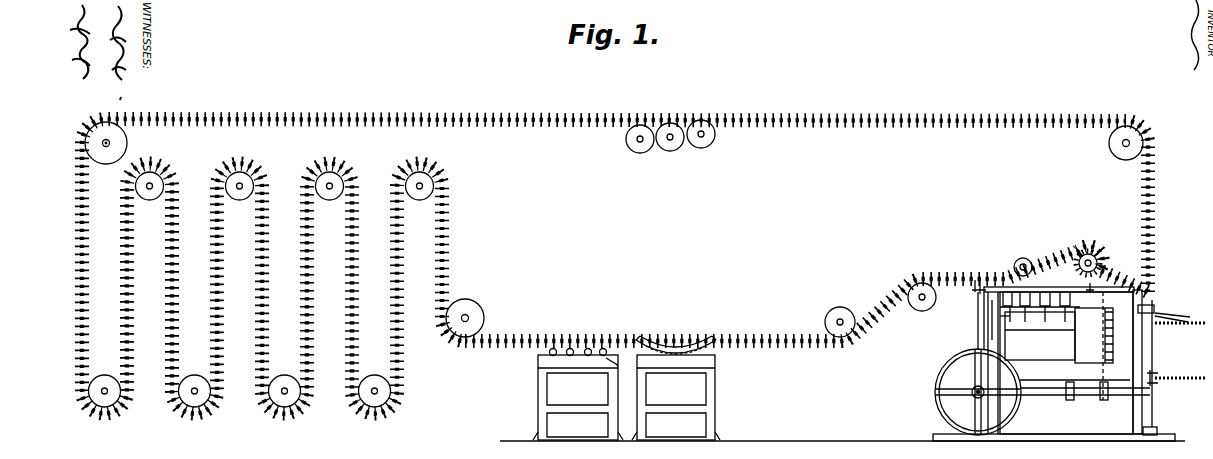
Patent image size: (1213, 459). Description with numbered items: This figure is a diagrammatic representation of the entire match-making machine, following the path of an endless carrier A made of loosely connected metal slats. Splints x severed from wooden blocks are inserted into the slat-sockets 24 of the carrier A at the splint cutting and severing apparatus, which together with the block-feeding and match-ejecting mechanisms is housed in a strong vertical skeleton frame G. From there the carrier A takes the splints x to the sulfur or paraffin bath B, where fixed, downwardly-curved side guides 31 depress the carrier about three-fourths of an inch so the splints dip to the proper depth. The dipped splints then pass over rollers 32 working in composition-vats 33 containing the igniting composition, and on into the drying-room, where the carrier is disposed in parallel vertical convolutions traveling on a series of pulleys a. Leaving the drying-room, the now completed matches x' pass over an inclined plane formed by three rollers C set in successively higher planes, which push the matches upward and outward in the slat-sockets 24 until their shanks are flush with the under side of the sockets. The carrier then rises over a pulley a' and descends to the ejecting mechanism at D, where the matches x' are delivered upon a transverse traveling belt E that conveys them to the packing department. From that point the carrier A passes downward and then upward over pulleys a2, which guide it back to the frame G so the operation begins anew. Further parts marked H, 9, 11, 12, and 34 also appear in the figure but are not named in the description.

The pulleys a is at (510, 264).
The pulley a' is at (1113, 144).
The pulleys a2 is at (1059, 255).
The splints x is at (806, 305).
The matches x' is at (630, 258).
The carrier A is at (1134, 275).
The sulfur or paraffin bath B is at (842, 398).
The rollers C is at (670, 144).
The ejecting mechanism D is at (1158, 310).
The transverse traveling belt E is at (1185, 341).
The vertical skeleton frame G is at (1054, 364).
The bar H is at (1000, 316).
The standard 9 is at (990, 328).
The box 11 is at (1040, 326).
The block 12 is at (1094, 335).
The slat-sockets 24 is at (936, 399).
The side guides 31 is at (675, 350).
The rollers 32 is at (548, 355).
The composition-vats 33 is at (620, 365).
The guide 34 is at (978, 280).